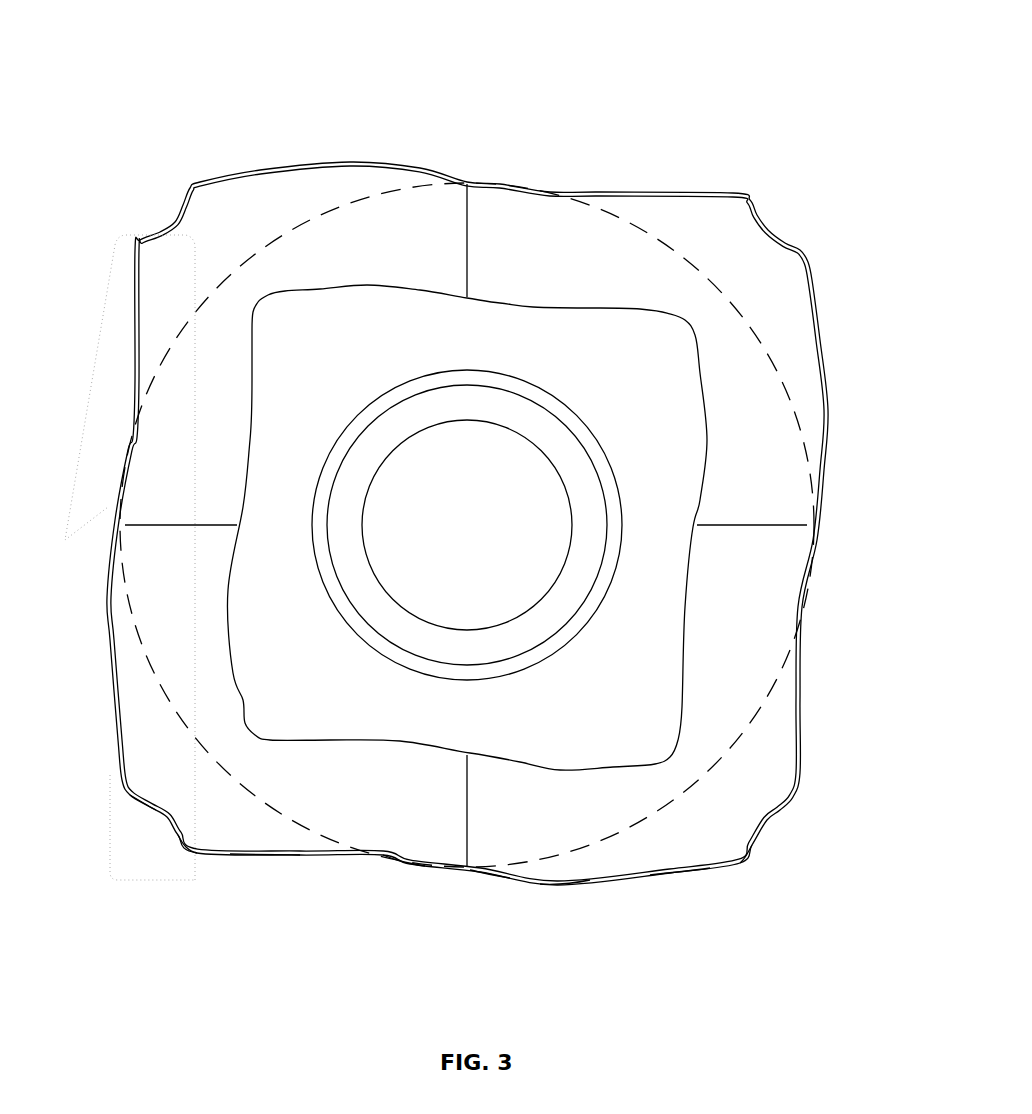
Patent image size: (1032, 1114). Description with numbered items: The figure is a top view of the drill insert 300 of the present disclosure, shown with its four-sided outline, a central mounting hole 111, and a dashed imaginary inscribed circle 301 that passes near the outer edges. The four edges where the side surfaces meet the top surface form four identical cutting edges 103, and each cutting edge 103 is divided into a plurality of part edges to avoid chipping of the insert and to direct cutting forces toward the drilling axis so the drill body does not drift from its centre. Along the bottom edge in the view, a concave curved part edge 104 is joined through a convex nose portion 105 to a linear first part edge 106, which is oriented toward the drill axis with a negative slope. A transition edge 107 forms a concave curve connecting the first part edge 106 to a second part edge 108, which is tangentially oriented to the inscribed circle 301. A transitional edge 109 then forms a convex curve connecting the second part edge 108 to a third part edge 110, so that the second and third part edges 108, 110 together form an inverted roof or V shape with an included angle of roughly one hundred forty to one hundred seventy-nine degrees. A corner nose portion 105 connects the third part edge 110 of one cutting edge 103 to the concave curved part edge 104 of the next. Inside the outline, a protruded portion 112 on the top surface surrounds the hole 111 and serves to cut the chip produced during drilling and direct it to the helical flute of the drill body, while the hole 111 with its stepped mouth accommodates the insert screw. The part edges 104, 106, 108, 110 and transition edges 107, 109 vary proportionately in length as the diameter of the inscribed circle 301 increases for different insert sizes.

The imaging assembly outline 300 is at (712, 92).
The imaginary inscribed circle 301 is at (748, 318).
The protruded portion 112 is at (715, 445).
The hole 111 is at (520, 580).
The cutting edge 103 is at (113, 557).
The concave curved part edge 104 is at (158, 824).
The nose portion 105 is at (192, 857).
The first part edge 106 is at (260, 853).
The transition edge 107 is at (406, 867).
The second part edge 108 is at (486, 883).
The transitional edge 109 is at (556, 887).
The third part edge 110 is at (669, 881).